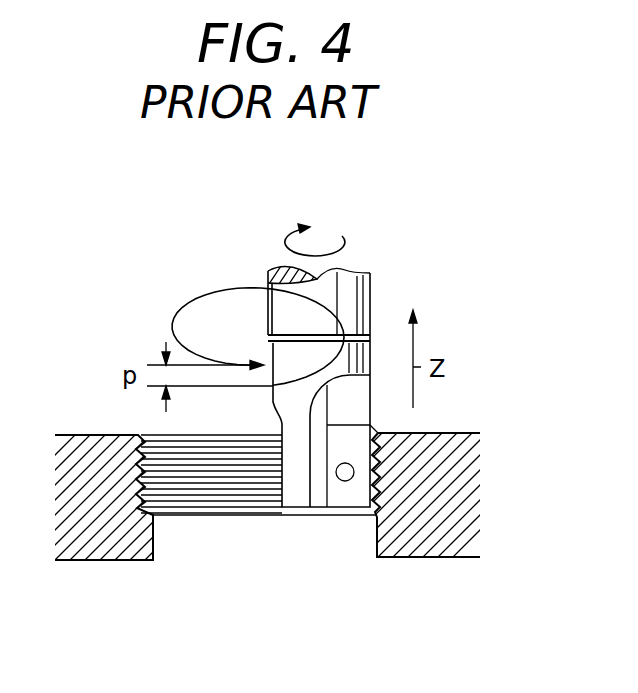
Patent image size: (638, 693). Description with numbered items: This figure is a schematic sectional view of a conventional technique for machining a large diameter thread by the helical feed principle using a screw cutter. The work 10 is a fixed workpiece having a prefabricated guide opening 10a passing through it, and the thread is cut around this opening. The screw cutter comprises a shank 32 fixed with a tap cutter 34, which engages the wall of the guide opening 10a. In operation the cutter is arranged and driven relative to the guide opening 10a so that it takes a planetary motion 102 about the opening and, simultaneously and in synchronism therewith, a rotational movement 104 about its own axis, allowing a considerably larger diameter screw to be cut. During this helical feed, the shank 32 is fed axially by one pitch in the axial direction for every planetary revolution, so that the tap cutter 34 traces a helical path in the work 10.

The work 10 is at (110, 562).
The prefabricated guide opening 10a is at (155, 533).
The shank 32 is at (348, 288).
The tap cutter 34 is at (343, 497).
The planetary motion 102 is at (203, 302).
The rotational movement 104 is at (342, 236).